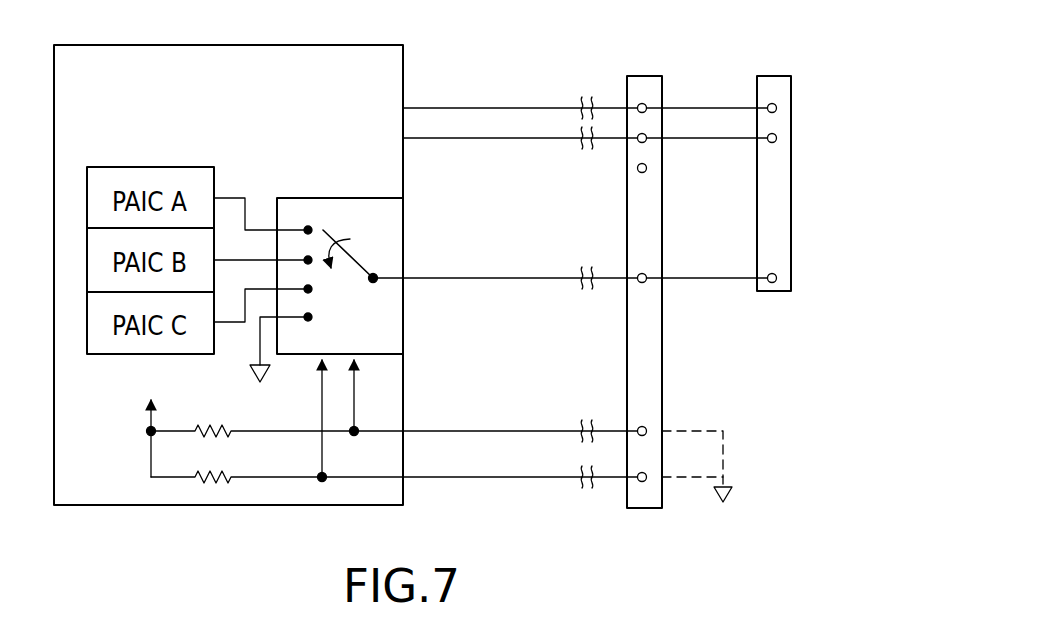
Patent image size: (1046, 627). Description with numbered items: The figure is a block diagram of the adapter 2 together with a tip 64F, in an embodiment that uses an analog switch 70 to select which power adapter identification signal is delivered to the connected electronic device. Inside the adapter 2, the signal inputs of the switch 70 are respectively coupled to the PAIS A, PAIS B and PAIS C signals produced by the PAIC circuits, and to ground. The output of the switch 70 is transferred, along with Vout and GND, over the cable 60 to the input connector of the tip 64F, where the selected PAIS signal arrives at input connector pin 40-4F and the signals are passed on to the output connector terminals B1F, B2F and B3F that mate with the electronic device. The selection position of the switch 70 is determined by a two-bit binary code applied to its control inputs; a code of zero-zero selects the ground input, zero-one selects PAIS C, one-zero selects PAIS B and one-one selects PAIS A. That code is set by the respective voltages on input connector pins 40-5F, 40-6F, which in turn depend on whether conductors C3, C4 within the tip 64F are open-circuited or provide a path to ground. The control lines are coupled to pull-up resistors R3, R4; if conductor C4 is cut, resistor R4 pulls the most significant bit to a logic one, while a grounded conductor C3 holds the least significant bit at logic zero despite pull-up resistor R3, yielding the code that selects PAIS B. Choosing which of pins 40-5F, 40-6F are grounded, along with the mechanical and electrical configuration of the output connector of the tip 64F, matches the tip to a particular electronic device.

The adapter 2 is at (403, 505).
The cable 60 is at (528, 343).
The analog switch 70 is at (390, 228).
The tip 64F is at (793, 57).
The input connector pin 40-4F is at (645, 281).
The input connector pin 40-5F is at (645, 434).
The input connector pin 40-6F is at (645, 480).
The output connector terminal B1F is at (776, 108).
The output connector terminal B2F is at (776, 138).
The output connector terminal B3F is at (776, 278).
The conductor C3 is at (720, 430).
The conductor C4 is at (717, 477).
The pull-up resistor R3 is at (277, 413).
The pull-up resistor R4 is at (277, 461).